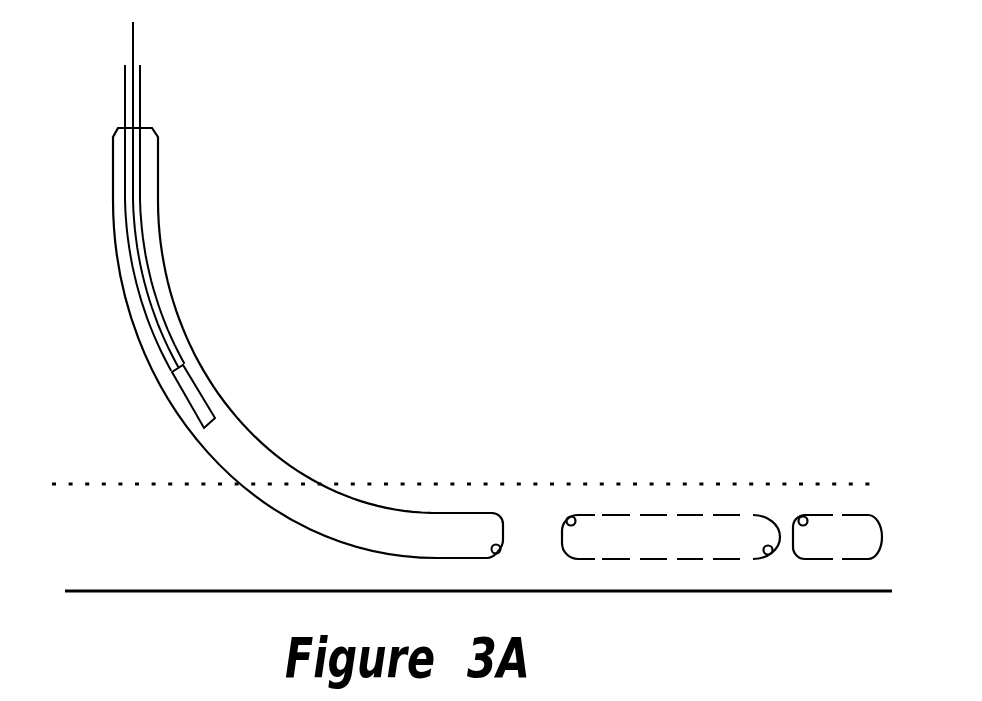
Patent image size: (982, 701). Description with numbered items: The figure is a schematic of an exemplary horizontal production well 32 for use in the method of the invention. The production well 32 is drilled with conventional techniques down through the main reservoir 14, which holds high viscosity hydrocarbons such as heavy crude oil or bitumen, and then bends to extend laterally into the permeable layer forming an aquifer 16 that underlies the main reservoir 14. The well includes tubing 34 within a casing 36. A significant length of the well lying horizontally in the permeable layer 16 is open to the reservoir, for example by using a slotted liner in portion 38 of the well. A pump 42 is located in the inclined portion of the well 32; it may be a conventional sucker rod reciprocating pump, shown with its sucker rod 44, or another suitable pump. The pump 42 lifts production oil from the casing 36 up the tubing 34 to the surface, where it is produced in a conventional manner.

The main reservoir 14 is at (487, 310).
The aquifer 16 is at (172, 561).
The horizontal production well 32 is at (265, 280).
The tubing 34 is at (142, 97).
The casing 36 is at (158, 192).
The slotted liner portion 38 is at (713, 482).
The pump 42 is at (186, 402).
The sucker rod 44 is at (132, 45).